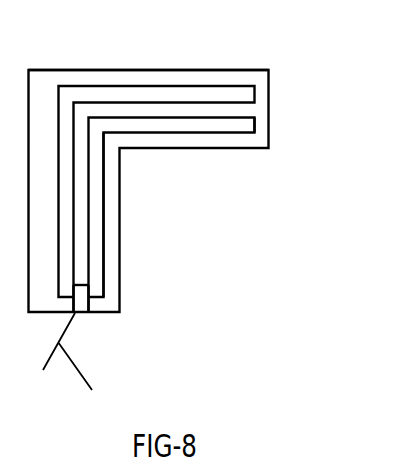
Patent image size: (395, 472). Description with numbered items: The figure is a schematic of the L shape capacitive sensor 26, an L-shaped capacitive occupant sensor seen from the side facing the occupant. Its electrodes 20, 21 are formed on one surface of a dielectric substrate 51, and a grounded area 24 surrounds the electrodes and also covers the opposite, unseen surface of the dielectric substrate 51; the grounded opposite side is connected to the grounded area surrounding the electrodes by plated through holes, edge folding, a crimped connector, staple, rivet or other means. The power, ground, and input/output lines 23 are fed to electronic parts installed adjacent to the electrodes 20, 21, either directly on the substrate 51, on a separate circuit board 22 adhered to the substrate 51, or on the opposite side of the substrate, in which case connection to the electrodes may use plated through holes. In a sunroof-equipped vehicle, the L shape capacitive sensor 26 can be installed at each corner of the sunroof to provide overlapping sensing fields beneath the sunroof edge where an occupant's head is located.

The electrode 20 is at (122, 102).
The electrode 21 is at (285, 232).
The separate circuit board 22 is at (88, 315).
The power, ground, and input/output lines 23 is at (76, 368).
The grounded area 24 is at (268, 88).
The L shape capacitive sensor 26 is at (172, 70).
The dielectric substrate 51 is at (47, 251).